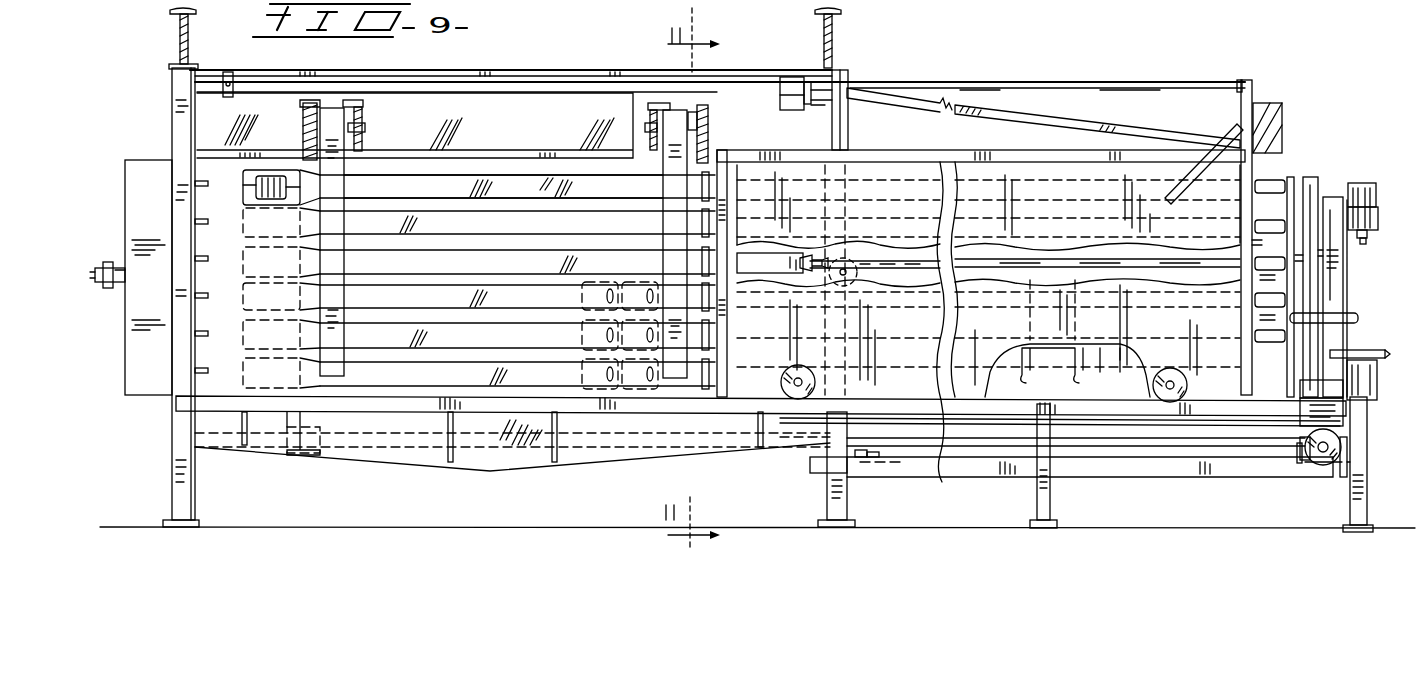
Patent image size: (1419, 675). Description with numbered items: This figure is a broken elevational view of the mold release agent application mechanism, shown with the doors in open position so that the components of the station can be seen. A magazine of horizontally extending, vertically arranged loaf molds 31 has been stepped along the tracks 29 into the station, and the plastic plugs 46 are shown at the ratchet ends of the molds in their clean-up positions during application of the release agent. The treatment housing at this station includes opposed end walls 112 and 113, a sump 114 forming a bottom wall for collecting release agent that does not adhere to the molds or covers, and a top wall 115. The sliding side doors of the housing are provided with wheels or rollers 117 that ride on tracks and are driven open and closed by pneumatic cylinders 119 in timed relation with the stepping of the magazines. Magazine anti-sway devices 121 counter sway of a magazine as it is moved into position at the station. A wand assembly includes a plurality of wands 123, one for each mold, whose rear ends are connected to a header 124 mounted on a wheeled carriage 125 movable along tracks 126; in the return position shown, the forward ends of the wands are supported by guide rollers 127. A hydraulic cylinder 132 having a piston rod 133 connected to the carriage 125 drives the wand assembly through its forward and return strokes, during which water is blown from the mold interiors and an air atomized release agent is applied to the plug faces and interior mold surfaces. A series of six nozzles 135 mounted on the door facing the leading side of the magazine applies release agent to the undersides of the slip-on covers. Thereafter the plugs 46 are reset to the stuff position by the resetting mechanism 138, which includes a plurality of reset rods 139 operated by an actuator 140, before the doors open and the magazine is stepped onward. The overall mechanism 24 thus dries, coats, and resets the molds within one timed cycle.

The apparatus assembly 24 is at (590, 52).
The tracks 29 is at (302, 145).
The loaf molds 31 is at (517, 262).
The plastic plug 46 is at (285, 170).
The end wall 112 is at (185, 103).
The end wall 113 is at (840, 105).
The sump 114 is at (430, 455).
The top wall 115 is at (624, 72).
The wheels or rollers 117 is at (782, 382).
The pneumatic cylinders 119 is at (700, 83).
The magazine anti-sway devices 121 is at (350, 102).
The wands 123 is at (1000, 253).
The header 124 is at (1298, 180).
The wheeled carriage 125 is at (1315, 461).
The tracks 126 is at (1278, 461).
The guide rollers 127 is at (848, 271).
The hydraulic cylinder 132 is at (581, 440).
The piston rod 133 is at (1130, 447).
The nozzles 135 is at (1067, 338).
The resetting mechanism 138 is at (150, 406).
The reset rods 139 is at (210, 236).
The actuator 140 is at (150, 298).